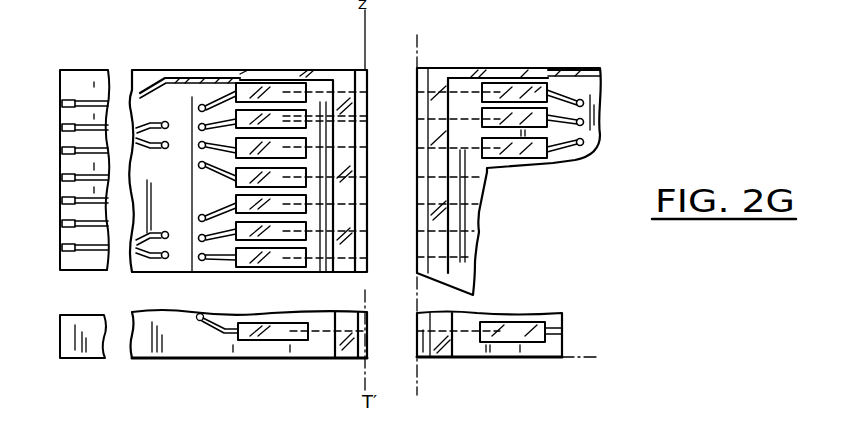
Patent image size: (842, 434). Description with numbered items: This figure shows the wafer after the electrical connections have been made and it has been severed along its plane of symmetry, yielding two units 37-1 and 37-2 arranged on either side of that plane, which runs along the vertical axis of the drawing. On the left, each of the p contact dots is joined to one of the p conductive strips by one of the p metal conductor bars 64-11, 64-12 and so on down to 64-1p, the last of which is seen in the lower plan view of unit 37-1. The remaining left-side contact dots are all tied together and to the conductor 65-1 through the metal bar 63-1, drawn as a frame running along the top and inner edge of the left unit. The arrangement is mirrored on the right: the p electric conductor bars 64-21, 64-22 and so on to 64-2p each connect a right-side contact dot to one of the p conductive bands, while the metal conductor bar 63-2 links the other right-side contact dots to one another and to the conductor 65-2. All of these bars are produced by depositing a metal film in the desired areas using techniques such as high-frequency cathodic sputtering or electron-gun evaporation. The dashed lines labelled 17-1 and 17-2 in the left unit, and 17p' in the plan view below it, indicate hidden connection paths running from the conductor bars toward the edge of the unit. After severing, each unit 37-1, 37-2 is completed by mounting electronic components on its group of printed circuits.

The conductor 65-1 is at (180, 76).
The metal conductor bar 64-12 is at (247, 127).
The metal conductor bar 64-11 is at (273, 85).
The metal bar 63-1 is at (342, 73).
The first conductor path 17-1 is at (370, 93).
The second conductor path 17-2 is at (392, 116).
The metal conductor bar 63-2 is at (447, 70).
The electric conductor bar 64-21 is at (513, 98).
The conductor 65-2 is at (580, 69).
The electric conductor bar 64-22 is at (516, 140).
The unit 37-1 is at (134, 376).
The metal conductor bar 64-1p is at (248, 341).
The conductor path (plan view) 17p' is at (313, 371).
The electric conductor bar 64-2p is at (508, 343).
The unit 37-2 is at (557, 375).